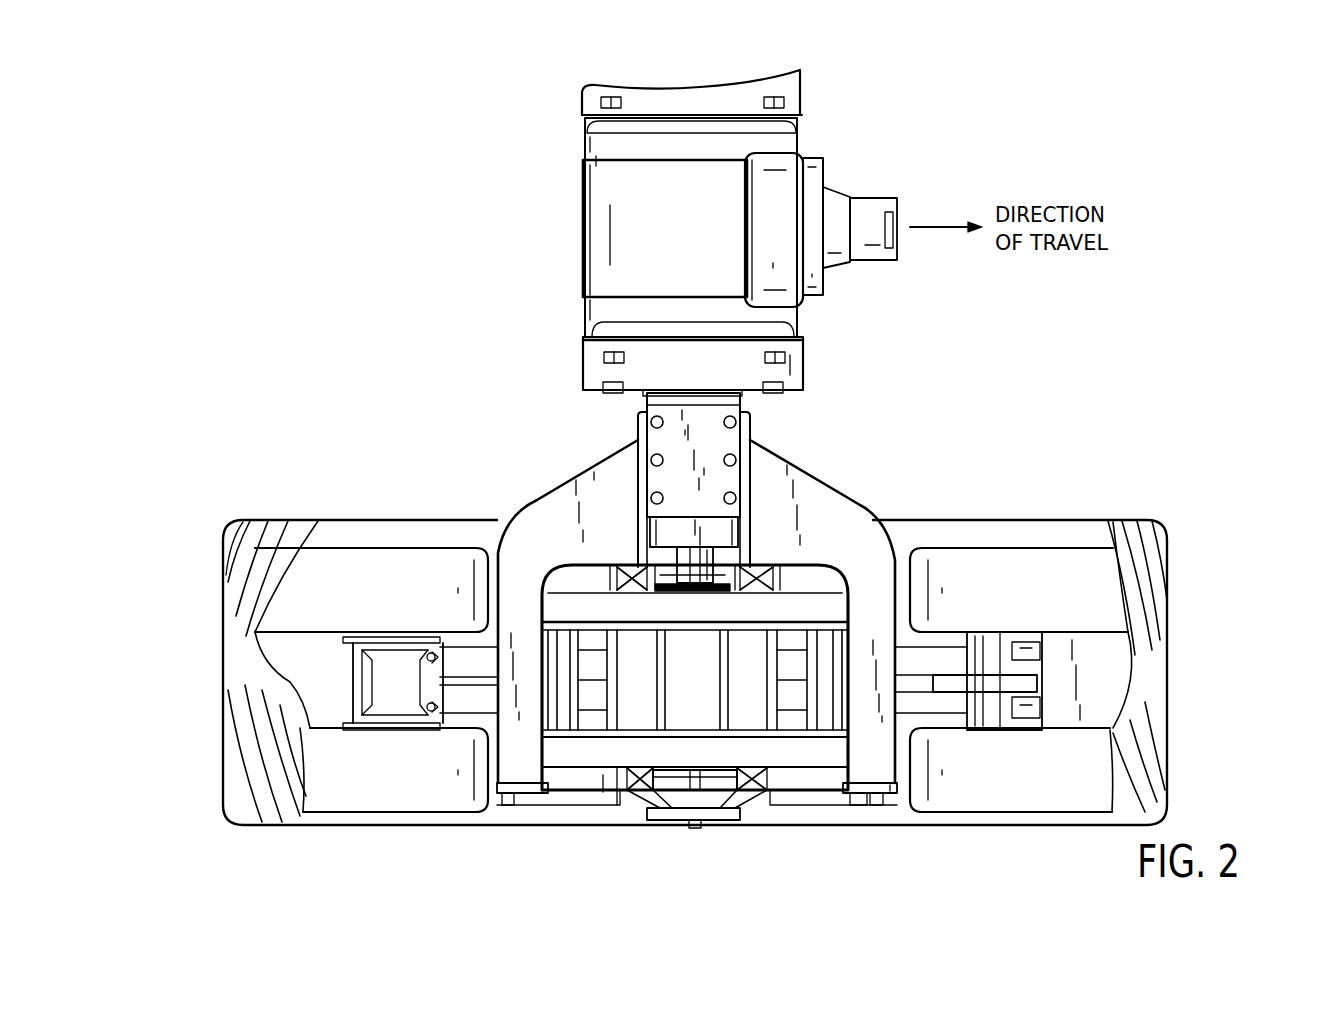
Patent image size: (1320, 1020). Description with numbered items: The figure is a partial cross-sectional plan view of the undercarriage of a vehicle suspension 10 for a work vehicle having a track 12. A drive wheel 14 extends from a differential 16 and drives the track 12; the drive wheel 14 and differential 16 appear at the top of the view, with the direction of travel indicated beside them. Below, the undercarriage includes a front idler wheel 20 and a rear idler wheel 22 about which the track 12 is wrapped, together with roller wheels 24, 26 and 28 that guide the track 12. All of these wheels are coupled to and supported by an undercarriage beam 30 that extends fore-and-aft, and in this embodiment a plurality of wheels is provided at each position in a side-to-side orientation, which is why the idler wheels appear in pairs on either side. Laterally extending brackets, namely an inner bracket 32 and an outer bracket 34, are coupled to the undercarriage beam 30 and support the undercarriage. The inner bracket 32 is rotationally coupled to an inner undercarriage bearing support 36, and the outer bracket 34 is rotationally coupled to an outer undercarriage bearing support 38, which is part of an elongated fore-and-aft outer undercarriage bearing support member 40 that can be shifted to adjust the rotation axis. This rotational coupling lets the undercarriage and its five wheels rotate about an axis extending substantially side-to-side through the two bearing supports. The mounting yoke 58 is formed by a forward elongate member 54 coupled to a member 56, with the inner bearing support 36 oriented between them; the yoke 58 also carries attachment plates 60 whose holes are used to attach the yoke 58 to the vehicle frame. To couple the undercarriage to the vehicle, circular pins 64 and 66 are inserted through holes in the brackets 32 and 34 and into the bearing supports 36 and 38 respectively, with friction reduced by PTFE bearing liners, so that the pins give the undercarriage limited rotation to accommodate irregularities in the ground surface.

The vehicle suspension 10 is at (268, 494).
The track 12 is at (1165, 575).
The drive wheel 14 is at (795, 590).
The differential 16 is at (582, 232).
The front idler wheel 20 is at (1045, 563).
The rear idler wheel 22 is at (372, 560).
The roller wheel 24 is at (874, 803).
The roller wheel 26 is at (755, 801).
The roller wheel 28 is at (507, 803).
The undercarriage beam 30 is at (920, 647).
The inner bracket 32 is at (627, 567).
The outer bracket 34 is at (632, 795).
The inner undercarriage bearing support 36 is at (722, 573).
The outer undercarriage bearing support 38 is at (695, 802).
The outer undercarriage bearing support member 40 is at (806, 797).
The forward elongate member 54 is at (884, 775).
The member 56 is at (534, 765).
The mounting yoke 58 is at (582, 455).
The attachment plates 60 is at (638, 428).
The circular pin 64 is at (693, 553).
The circular pin 66 is at (687, 822).